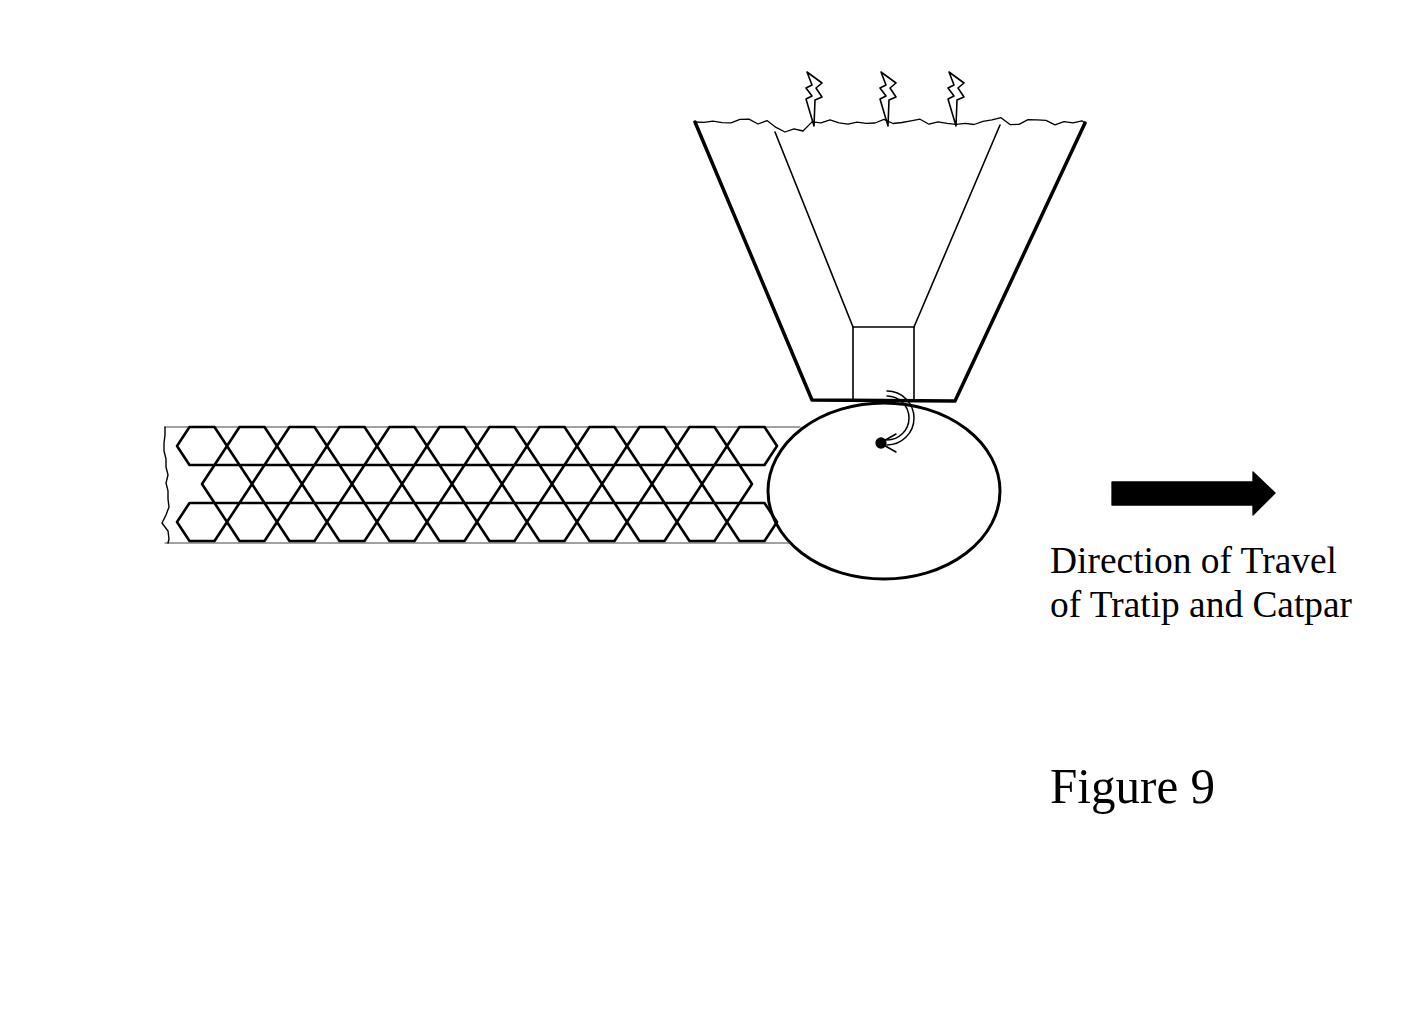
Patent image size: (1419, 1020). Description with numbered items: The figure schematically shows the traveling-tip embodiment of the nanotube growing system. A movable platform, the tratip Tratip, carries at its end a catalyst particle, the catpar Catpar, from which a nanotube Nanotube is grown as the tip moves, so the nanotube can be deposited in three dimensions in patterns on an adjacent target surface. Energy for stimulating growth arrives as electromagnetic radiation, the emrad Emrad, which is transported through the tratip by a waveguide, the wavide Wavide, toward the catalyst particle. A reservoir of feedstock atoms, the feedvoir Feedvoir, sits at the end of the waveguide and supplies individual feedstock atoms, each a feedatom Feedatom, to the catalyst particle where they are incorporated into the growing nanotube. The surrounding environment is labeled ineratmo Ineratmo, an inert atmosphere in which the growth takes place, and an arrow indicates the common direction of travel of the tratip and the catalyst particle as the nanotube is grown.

The inert atmosphere Ineratmo is at (483, 70).
The electromagnetic radiation Emrad is at (995, 98).
The traveling tip Tratip is at (708, 227).
The nanotube Nanotube is at (434, 408).
The waveguide Wavide is at (897, 250).
The feedstock atom Feedatom is at (864, 427).
The feedstock reservoir Feedvoir is at (895, 365).
The catalyst particle Catpar is at (783, 561).